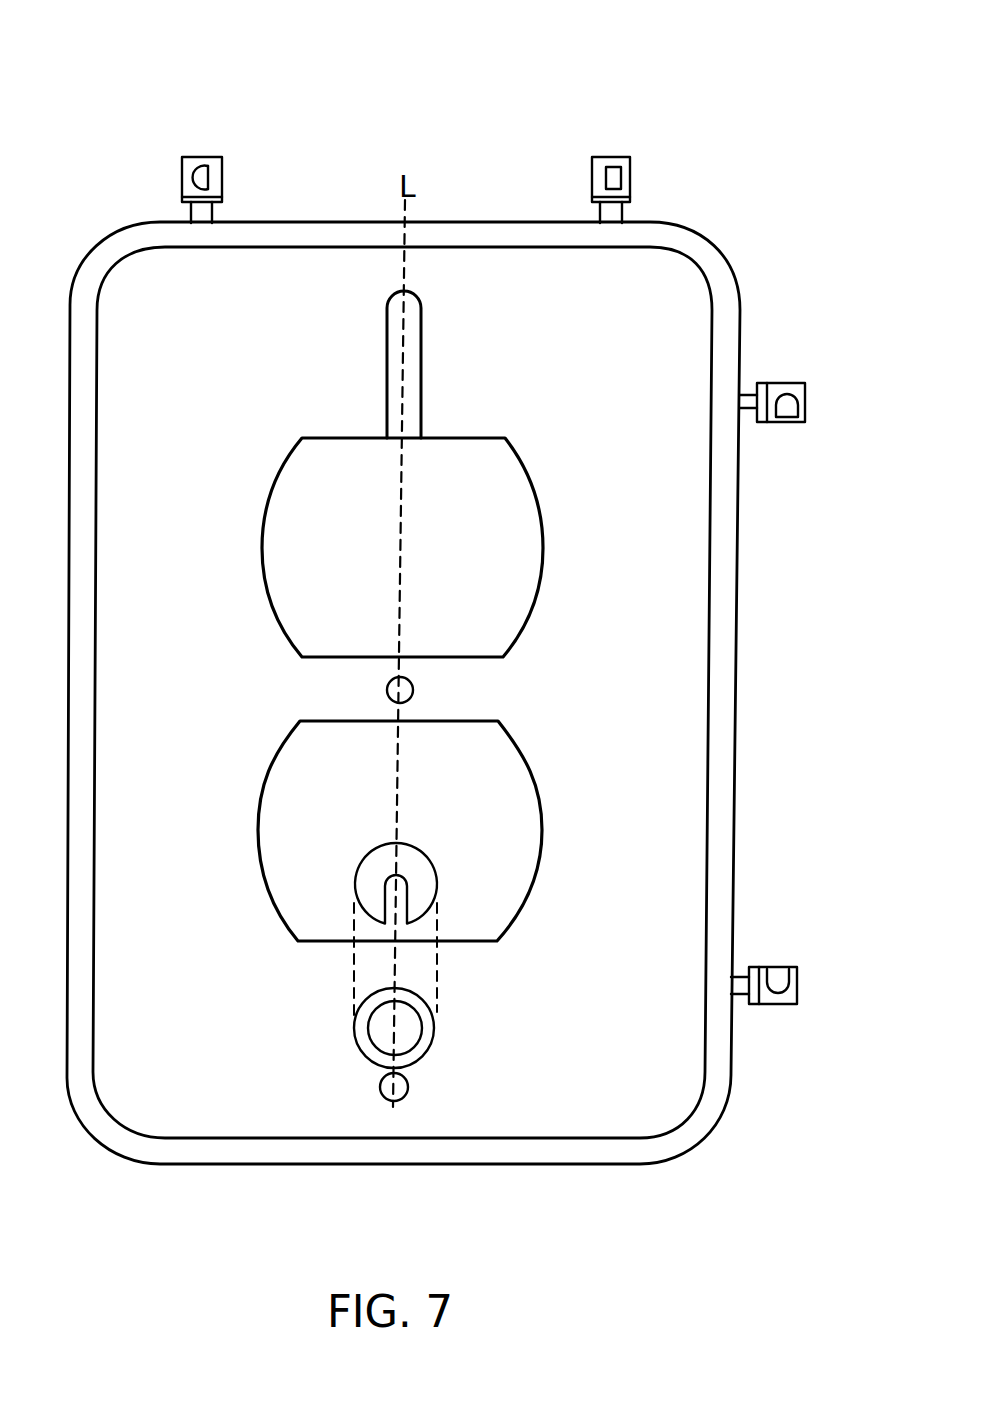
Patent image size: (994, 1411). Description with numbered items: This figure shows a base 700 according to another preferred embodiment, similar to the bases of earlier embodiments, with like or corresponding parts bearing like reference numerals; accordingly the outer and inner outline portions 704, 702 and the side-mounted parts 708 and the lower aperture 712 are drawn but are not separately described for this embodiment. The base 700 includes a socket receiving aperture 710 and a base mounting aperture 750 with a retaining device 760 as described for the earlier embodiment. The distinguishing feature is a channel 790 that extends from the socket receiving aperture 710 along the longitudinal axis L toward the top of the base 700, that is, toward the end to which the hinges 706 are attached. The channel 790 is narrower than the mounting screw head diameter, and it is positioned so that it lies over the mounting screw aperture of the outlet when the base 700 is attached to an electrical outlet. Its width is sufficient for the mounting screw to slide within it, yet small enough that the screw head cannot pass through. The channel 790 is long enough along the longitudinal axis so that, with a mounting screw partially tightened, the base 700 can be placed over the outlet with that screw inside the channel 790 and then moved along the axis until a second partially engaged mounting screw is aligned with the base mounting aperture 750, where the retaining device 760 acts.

The base 700 is at (362, 114).
The inner shell / housing interior 702 is at (662, 334).
The outer shell / housing 704 is at (687, 247).
The hinges 706 is at (210, 188).
The hinge 708 is at (789, 386).
The socket receiving aperture 710 is at (383, 614).
The lower drum 712 is at (380, 787).
The base mounting aperture 750 is at (380, 1037).
The retaining device 760 is at (360, 866).
The channel 790 is at (397, 373).